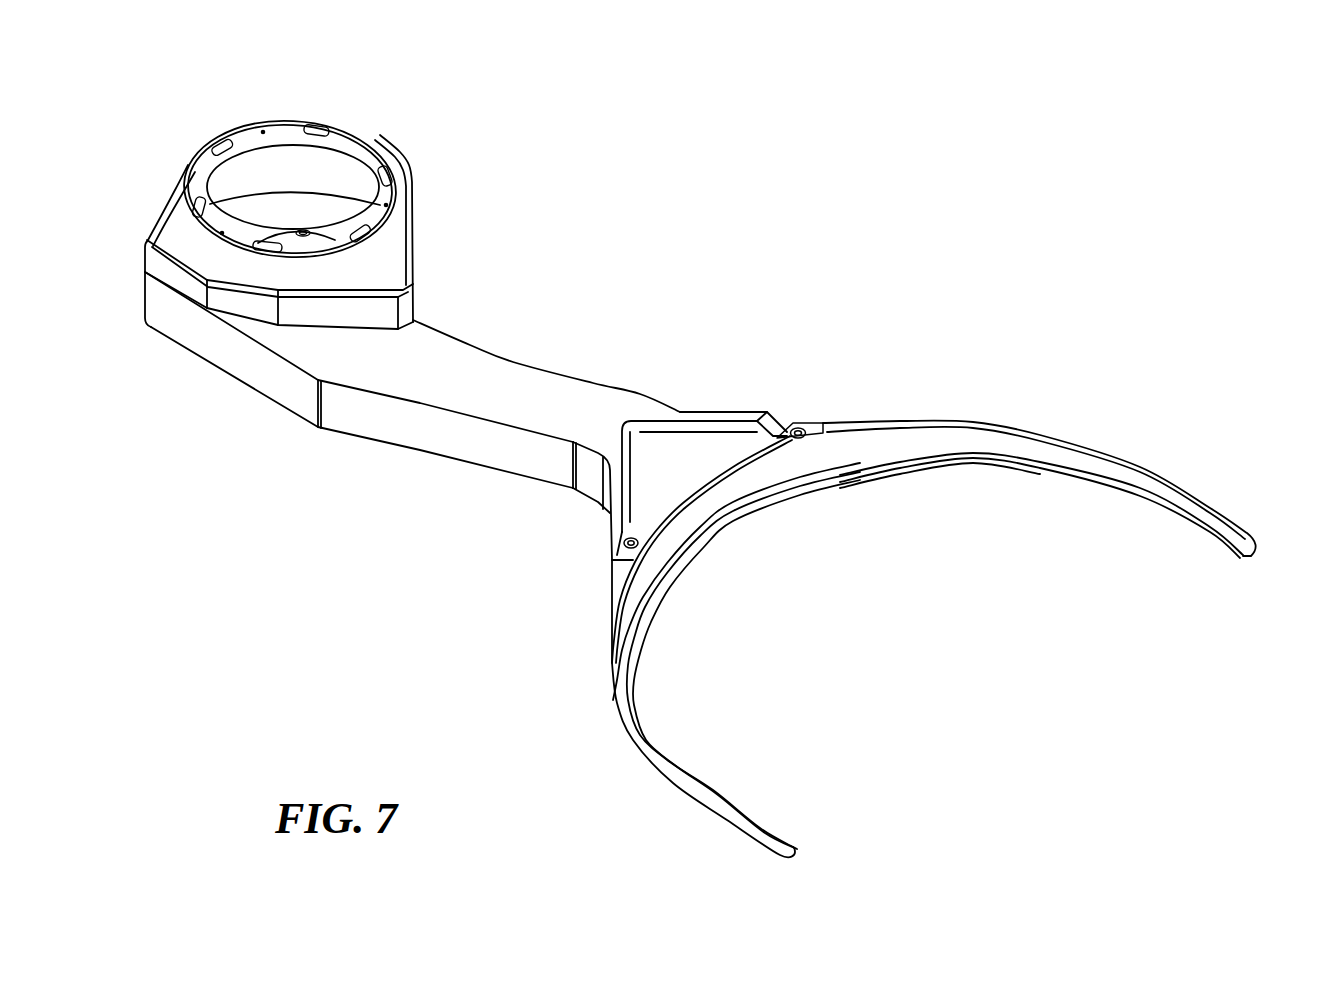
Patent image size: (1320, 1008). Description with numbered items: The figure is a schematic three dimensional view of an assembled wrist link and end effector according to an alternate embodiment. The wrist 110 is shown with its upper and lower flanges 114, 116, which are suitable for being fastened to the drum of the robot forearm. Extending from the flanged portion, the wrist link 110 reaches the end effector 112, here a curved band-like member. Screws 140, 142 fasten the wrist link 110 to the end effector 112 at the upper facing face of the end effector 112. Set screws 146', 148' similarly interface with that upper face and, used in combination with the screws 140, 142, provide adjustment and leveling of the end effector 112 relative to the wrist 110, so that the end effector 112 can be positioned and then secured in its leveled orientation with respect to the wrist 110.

The wrist 110 is at (515, 366).
The end effector 112 is at (1020, 423).
The upper flange 114 is at (372, 137).
The lower flange 116 is at (270, 190).
The screw 140 is at (801, 426).
The screw 142 is at (624, 546).
The set screw 146' is at (767, 381).
The set screw 148' is at (699, 440).